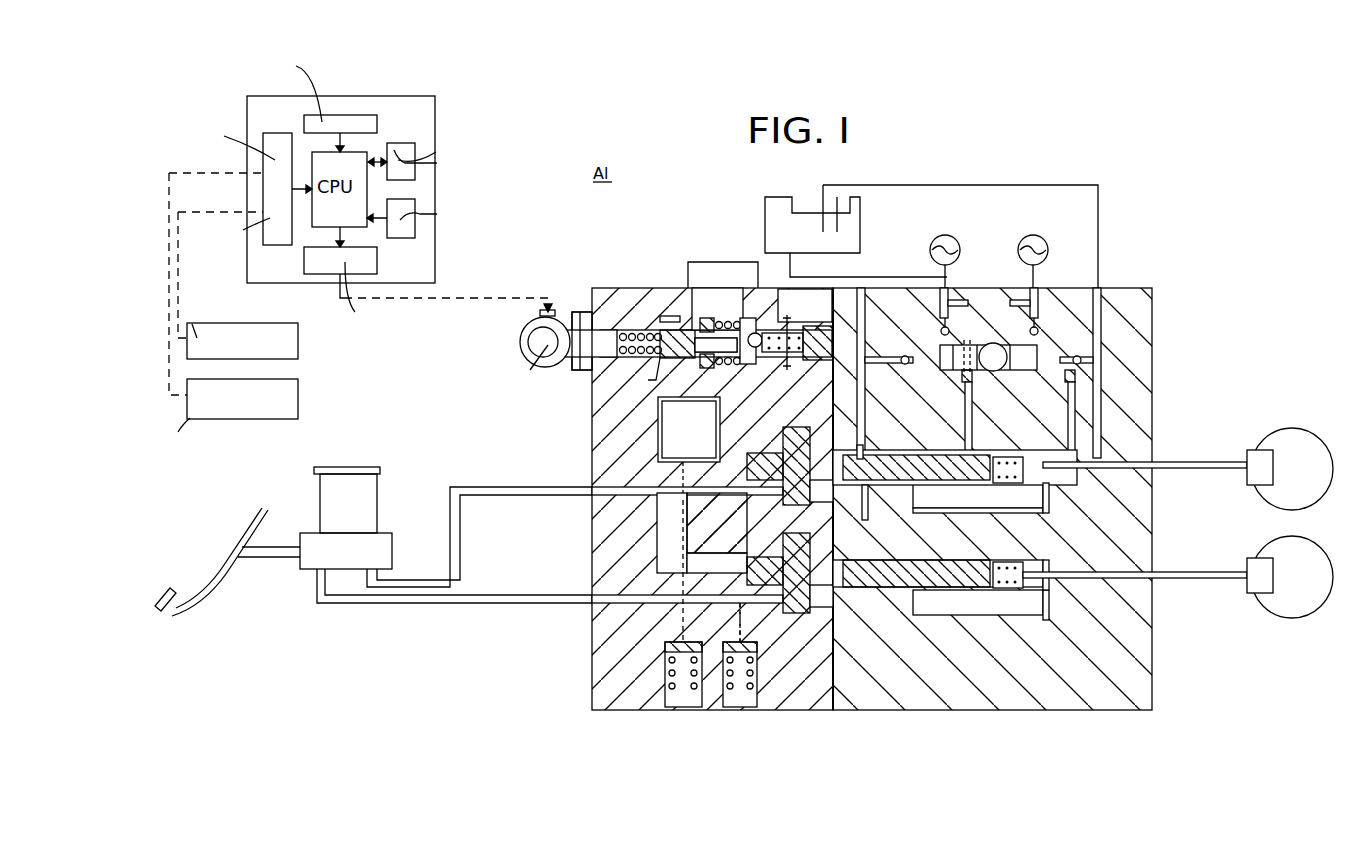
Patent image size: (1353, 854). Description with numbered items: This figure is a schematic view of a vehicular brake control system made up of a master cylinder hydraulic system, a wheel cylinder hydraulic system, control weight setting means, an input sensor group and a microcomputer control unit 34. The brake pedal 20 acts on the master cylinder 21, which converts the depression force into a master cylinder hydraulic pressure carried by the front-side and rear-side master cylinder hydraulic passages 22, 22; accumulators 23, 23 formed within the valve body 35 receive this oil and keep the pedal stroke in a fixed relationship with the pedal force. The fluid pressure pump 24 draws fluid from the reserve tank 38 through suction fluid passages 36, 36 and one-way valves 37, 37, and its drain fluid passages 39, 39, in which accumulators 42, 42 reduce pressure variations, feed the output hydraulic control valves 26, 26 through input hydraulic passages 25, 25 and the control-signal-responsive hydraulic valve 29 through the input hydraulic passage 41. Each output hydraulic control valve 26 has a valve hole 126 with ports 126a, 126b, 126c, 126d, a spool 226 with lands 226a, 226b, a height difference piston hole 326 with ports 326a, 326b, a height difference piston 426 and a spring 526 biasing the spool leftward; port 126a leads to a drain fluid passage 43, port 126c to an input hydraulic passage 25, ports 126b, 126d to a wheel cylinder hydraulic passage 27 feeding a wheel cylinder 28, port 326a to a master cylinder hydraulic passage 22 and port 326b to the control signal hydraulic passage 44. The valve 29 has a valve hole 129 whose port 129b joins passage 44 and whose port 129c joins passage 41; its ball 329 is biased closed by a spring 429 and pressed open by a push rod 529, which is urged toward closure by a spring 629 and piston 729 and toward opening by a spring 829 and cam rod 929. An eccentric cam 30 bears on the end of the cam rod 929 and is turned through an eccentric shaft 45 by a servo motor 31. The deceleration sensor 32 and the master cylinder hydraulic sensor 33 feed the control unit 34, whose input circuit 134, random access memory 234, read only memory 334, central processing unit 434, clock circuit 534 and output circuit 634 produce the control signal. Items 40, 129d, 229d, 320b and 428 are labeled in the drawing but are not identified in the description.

The brake pedal 20 is at (178, 592).
The master cylinder 21 is at (398, 525).
The master cylinder hydraulic passage 22 is at (474, 496).
The accumulator 23 is at (678, 708).
The fluid pressure pump 24 is at (978, 338).
The input hydraulic passage 25 is at (1005, 372).
The output hydraulic control valve 26 is at (892, 441).
The wheel cylinder hydraulic passage 27 is at (1222, 460).
The wheel cylinder 28 is at (1256, 450).
The control signal responsive hydraulic valve 29 is at (616, 311).
The eccentric cam 30 is at (524, 337).
The servo motor 31 is at (568, 371).
The deceleration sensor 32 is at (298, 340).
The master cylinder hydraulic sensor 33 is at (298, 396).
The control unit 34 is at (412, 96).
The valve body 35 is at (838, 716).
The suction fluid passage 36 is at (868, 355).
The one-way valve 37 is at (1070, 372).
The reserve tank 38 is at (808, 236).
The drain fluid passage 39 is at (940, 312).
The ball valve 40 is at (940, 331).
The input hydraulic passage 41 is at (880, 277).
The accumulator 42 is at (948, 234).
The drain fluid passage 43 is at (910, 365).
The control signal hydraulic passage 44 is at (686, 423).
The eccentric shaft 45 is at (530, 370).
The valve hole 126 is at (965, 412).
The port 126a is at (840, 300).
The port 126b is at (1043, 508).
The port 126c is at (1060, 620).
The port 126d is at (1043, 535).
The valve hole 129 is at (700, 362).
The port 129b is at (720, 428).
The port 129c is at (805, 329).
The spool port 129d is at (690, 300).
The input circuit 134 is at (285, 132).
The spool 226 is at (955, 455).
The land 226a is at (1050, 492).
The land 226b is at (1043, 520).
The valve port 229d is at (752, 333).
The RAM 234 is at (436, 160).
The cylinder bore 320b is at (700, 568).
The height difference piston hole 326 is at (760, 540).
The port 326a is at (760, 516).
The port 326b is at (700, 466).
The ball 329 is at (756, 333).
The ROM 334 is at (400, 238).
The height difference piston 426 is at (740, 556).
The valve rod 428 is at (660, 482).
The spring 429 is at (780, 360).
The CPU 434 is at (375, 150).
The spring 526 is at (1030, 470).
The push rod 529 is at (664, 366).
The clock circuit 534 is at (358, 120).
The spring 629 is at (728, 322).
The output circuit 634 is at (304, 262).
The piston 729 is at (708, 318).
The spring 829 is at (640, 360).
The cam rod 929 is at (580, 370).